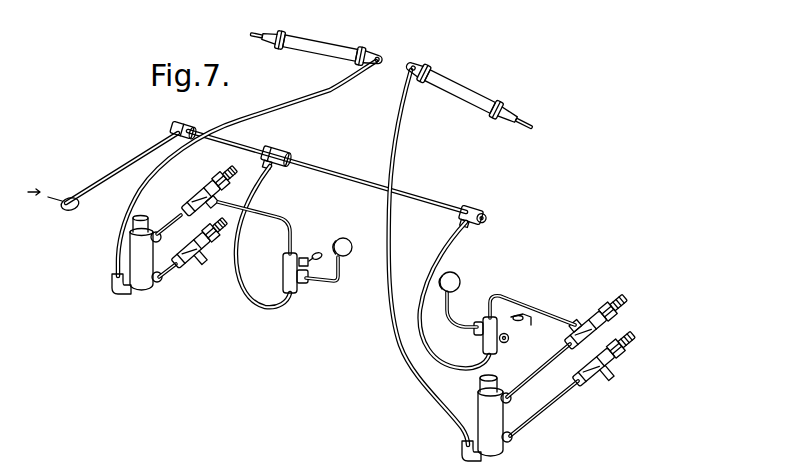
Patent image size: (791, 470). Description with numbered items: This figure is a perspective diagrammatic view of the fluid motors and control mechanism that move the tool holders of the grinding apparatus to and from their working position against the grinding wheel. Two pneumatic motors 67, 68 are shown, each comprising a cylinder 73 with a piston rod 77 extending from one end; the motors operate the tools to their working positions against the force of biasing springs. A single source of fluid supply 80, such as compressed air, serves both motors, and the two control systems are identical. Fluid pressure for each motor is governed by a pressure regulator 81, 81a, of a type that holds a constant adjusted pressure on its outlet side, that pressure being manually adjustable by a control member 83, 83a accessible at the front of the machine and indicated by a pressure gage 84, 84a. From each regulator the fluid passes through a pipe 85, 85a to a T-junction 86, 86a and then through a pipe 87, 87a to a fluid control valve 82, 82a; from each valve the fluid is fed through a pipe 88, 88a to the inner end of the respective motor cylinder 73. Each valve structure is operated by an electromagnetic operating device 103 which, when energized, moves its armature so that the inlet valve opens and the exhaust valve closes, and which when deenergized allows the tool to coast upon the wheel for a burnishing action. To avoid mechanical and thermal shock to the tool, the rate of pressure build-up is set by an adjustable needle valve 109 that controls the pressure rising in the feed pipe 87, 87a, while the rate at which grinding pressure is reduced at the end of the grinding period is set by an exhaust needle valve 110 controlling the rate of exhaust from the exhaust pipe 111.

The pneumatic motor 67 is at (472, 83).
The pneumatic motor 68 is at (316, 37).
The cylinder 73 is at (308, 53).
The piston rod 77 is at (253, 35).
The source of fluid supply 80 is at (60, 197).
The pressure regulator 81 is at (496, 352).
The pressure regulator 81a is at (294, 292).
The fluid control valve 82 is at (498, 444).
The fluid control valve 82a is at (147, 285).
The control member 83 is at (525, 320).
The control member 83a is at (318, 253).
The pressure gage 84 is at (462, 282).
The pressure gage 84a is at (343, 254).
The pipe 85 is at (544, 310).
The pipe 85a is at (270, 222).
The T-junction 86 is at (592, 320).
The T-junction 86a is at (198, 193).
The pipe 87 is at (546, 368).
The pipe 87a is at (167, 217).
The pipe 88 is at (412, 153).
The pipe 88a is at (288, 105).
The electromagnetic operating device 103 is at (132, 230).
The adjustable needle valve 109 is at (232, 167).
The exhaust needle valve 110 is at (228, 232).
The exhaust pipe 111 is at (174, 265).